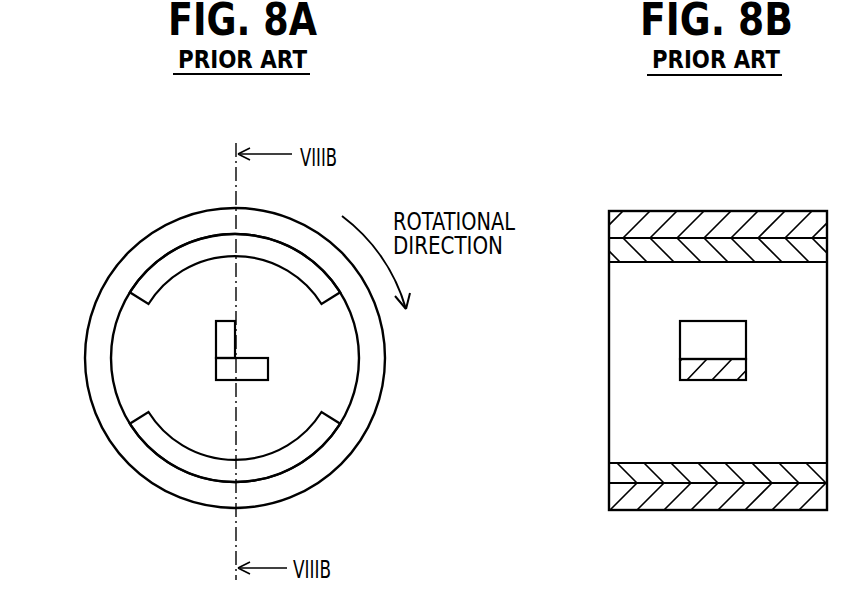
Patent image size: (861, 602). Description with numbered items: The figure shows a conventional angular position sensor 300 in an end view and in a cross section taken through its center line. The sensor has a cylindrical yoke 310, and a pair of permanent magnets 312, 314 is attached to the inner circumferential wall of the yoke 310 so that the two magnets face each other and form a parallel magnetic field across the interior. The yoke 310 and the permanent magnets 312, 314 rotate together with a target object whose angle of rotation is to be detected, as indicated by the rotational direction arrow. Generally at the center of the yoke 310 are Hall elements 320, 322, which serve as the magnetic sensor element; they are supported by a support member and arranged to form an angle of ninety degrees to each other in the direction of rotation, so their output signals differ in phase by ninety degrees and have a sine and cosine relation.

In FIG. 8A, the prior art rotary device 300 is at (188, 208).
In FIG. 8B, the prior art rotary device 300 is at (747, 199).
In FIG. 8A, the cylindrical yoke 310 is at (112, 287).
In FIG. 8B, the cylindrical yoke 310 is at (710, 223).
In FIG. 8A, the permanent magnet 312 is at (178, 258).
In FIG. 8B, the permanent magnet 312 is at (623, 250).
In FIG. 8A, the permanent magnet 314 is at (172, 457).
In FIG. 8B, the permanent magnet 314 is at (615, 474).
In FIG. 8A, the Hall element 320 is at (223, 342).
In FIG. 8B, the Hall element 320 is at (692, 339).
In FIG. 8A, the Hall element 322 is at (223, 371).
In FIG. 8B, the Hall element 322 is at (687, 368).